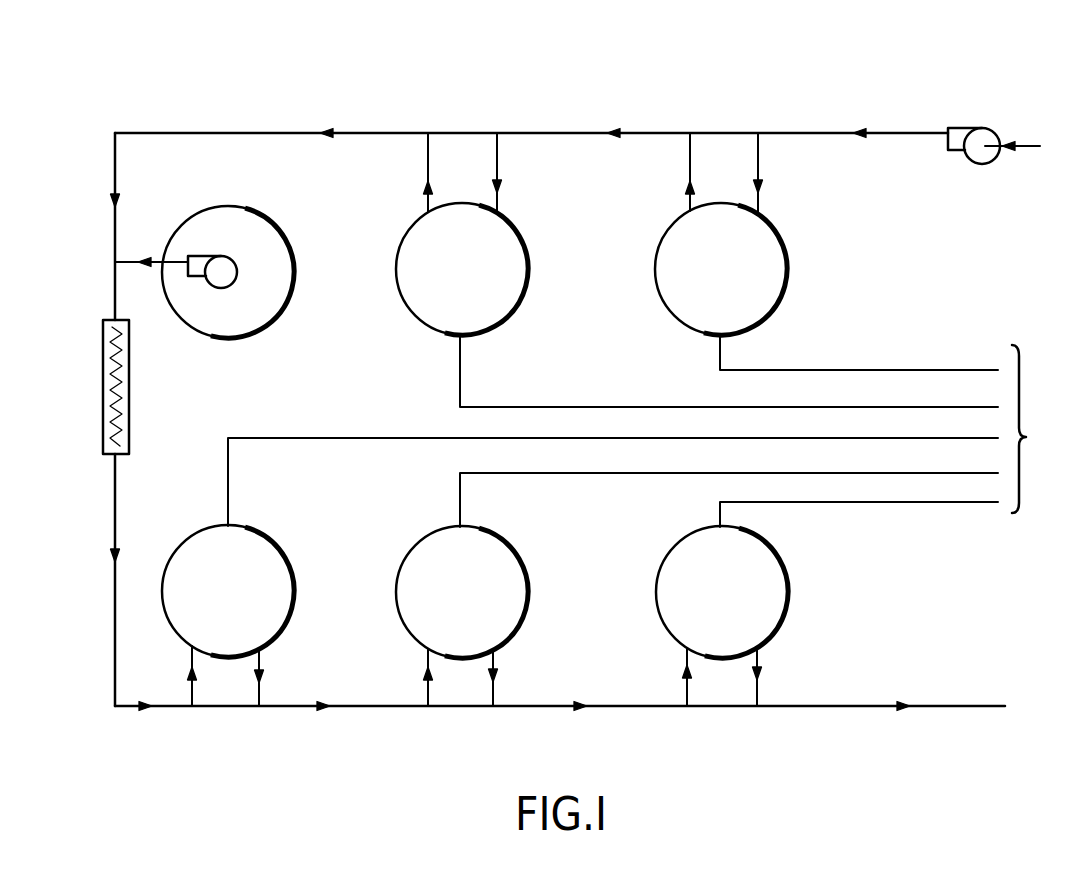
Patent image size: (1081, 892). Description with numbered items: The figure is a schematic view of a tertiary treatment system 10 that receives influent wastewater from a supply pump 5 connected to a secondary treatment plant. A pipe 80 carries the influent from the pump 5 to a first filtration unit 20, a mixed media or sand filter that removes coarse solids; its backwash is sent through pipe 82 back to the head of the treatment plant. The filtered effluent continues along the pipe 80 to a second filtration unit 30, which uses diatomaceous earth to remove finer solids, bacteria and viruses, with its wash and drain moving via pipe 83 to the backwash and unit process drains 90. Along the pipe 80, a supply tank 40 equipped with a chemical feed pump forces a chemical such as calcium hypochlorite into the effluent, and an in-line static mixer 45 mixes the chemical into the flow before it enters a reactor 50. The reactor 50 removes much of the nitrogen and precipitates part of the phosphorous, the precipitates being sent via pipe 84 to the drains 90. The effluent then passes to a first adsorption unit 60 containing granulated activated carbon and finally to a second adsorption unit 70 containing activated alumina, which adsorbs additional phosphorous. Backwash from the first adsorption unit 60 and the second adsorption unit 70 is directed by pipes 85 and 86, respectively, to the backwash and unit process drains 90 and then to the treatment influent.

The tertiary treatment system 10 is at (920, 96).
The supply pump 5 is at (985, 126).
The pipe 80 is at (796, 133).
The first filtration unit 20 is at (776, 285).
The second filtration unit 30 is at (516, 283).
The supply tank 40 is at (281, 283).
The in-line mixer 45 is at (126, 409).
The reactor 50 is at (276, 605).
The first adsorption unit 60 is at (516, 600).
The second adsorption unit 70 is at (776, 597).
The pipe 82 is at (840, 370).
The pipe 83 is at (594, 407).
The pipe 84 is at (318, 438).
The pipe 85 is at (472, 473).
The pipe 86 is at (736, 502).
The backwash and unit process drains 90 is at (1040, 429).